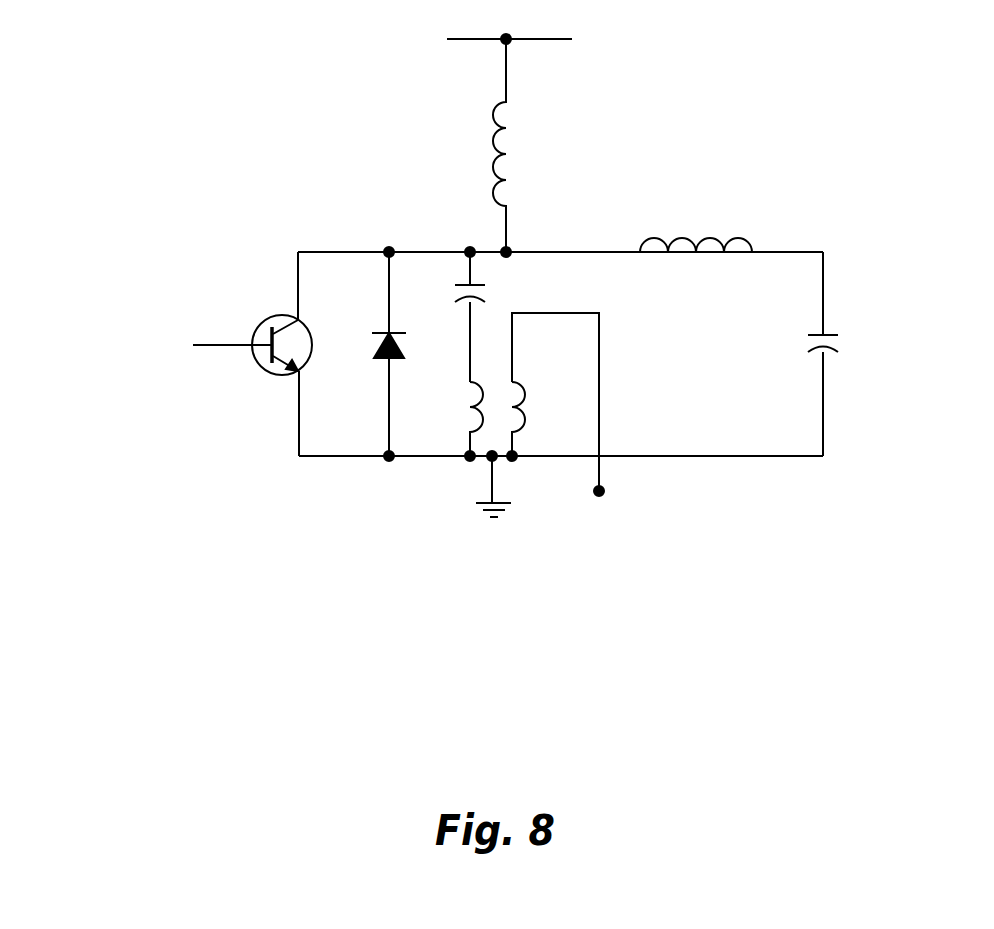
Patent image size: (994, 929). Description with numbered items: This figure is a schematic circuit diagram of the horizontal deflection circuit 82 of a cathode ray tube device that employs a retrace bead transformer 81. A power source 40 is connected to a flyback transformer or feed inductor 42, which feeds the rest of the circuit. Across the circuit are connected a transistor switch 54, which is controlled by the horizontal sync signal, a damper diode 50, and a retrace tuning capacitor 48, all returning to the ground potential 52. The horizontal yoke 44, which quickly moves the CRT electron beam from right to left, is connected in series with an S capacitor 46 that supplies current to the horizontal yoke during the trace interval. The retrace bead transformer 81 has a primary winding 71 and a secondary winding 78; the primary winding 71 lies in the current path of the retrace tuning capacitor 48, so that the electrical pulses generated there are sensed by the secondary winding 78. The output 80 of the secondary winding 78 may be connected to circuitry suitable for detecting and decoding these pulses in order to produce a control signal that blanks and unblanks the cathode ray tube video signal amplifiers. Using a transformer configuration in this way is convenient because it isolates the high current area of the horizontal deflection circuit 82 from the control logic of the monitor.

The power source 40 is at (475, 40).
The flyback transformer 42 is at (492, 139).
The horizontal yoke 44 is at (717, 237).
The S capacitor 46 is at (813, 336).
The retrace tuning capacitor 48 is at (478, 279).
The damper diode 50 is at (382, 350).
The ground potential 52 is at (493, 519).
The transistor switch 54 is at (255, 362).
The primary winding 71 is at (478, 407).
The secondary winding 78 is at (515, 380).
The output 80 is at (604, 491).
The retrace bead transformer 81 is at (550, 480).
The horizontal deflection circuit 82 is at (216, 569).